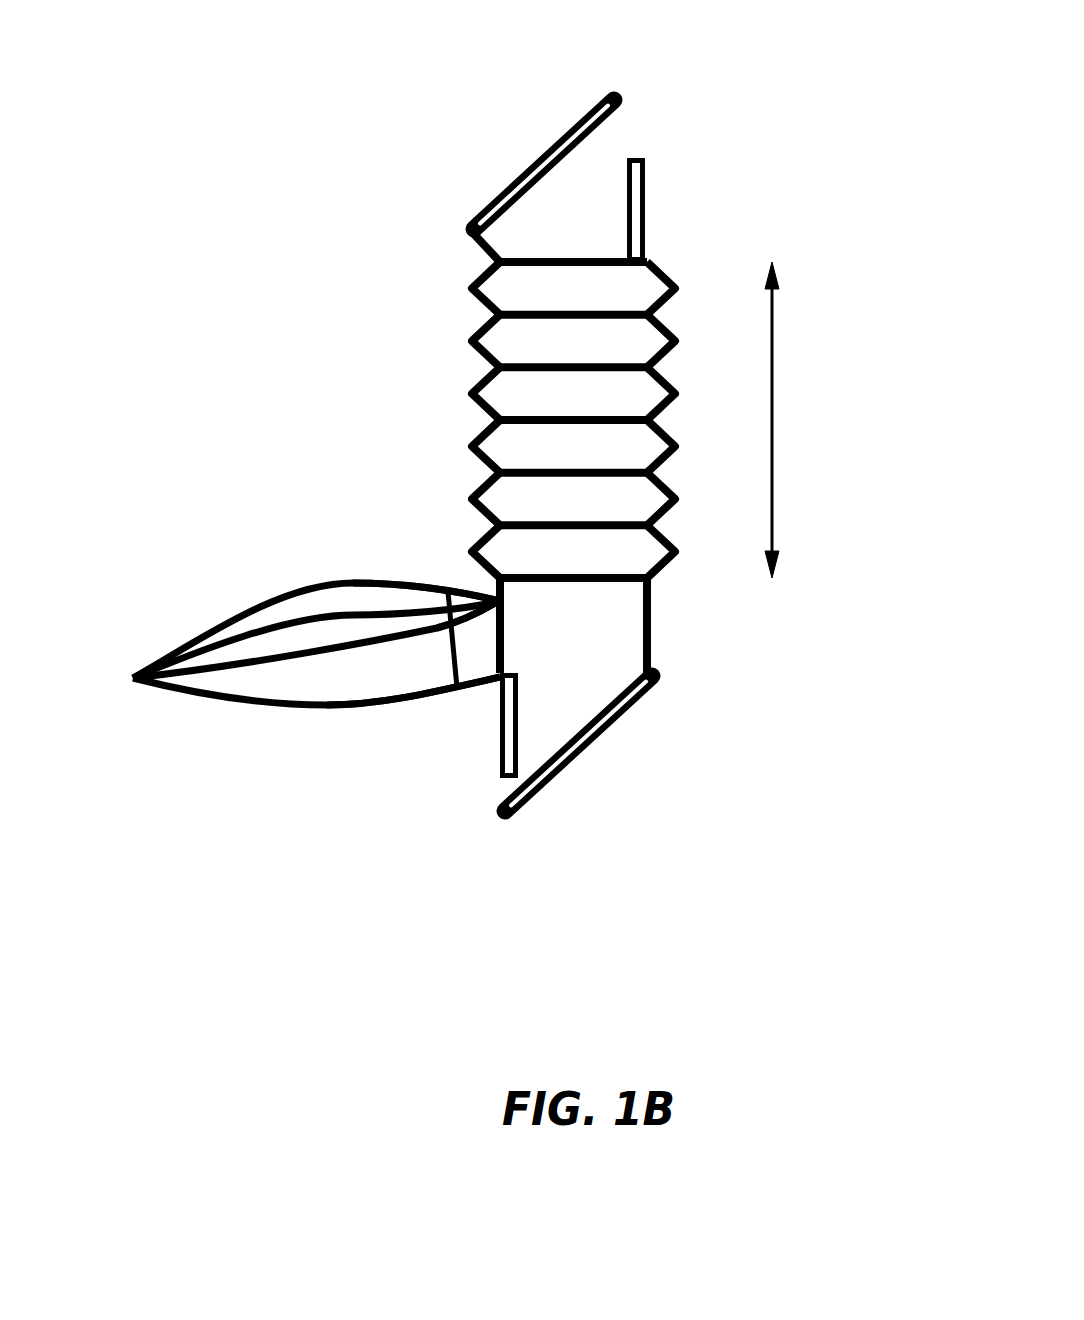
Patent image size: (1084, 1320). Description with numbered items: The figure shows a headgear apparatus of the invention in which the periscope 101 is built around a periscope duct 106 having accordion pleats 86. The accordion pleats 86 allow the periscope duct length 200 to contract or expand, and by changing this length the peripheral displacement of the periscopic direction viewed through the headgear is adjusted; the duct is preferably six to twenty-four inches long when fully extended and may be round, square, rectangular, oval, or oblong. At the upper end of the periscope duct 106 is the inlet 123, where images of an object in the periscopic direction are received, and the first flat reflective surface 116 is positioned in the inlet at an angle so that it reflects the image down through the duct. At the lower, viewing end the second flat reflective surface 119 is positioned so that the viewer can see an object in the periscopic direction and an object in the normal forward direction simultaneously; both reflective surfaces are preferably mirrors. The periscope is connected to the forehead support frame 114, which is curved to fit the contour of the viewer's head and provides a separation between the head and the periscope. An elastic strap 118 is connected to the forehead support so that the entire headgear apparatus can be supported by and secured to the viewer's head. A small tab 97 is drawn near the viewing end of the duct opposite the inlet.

The periscope 101 is at (325, 252).
The periscope duct 106 is at (685, 233).
The accordion pleats 86 is at (667, 352).
The periscope duct length 200 is at (774, 410).
The first flat reflective surface 116 is at (553, 137).
The inlet 123 is at (647, 157).
The second flat reflective surface 119 is at (600, 733).
The lower tab 97 is at (500, 762).
The forehead support frame 114 is at (457, 587).
The elastic strap 118 is at (290, 593).